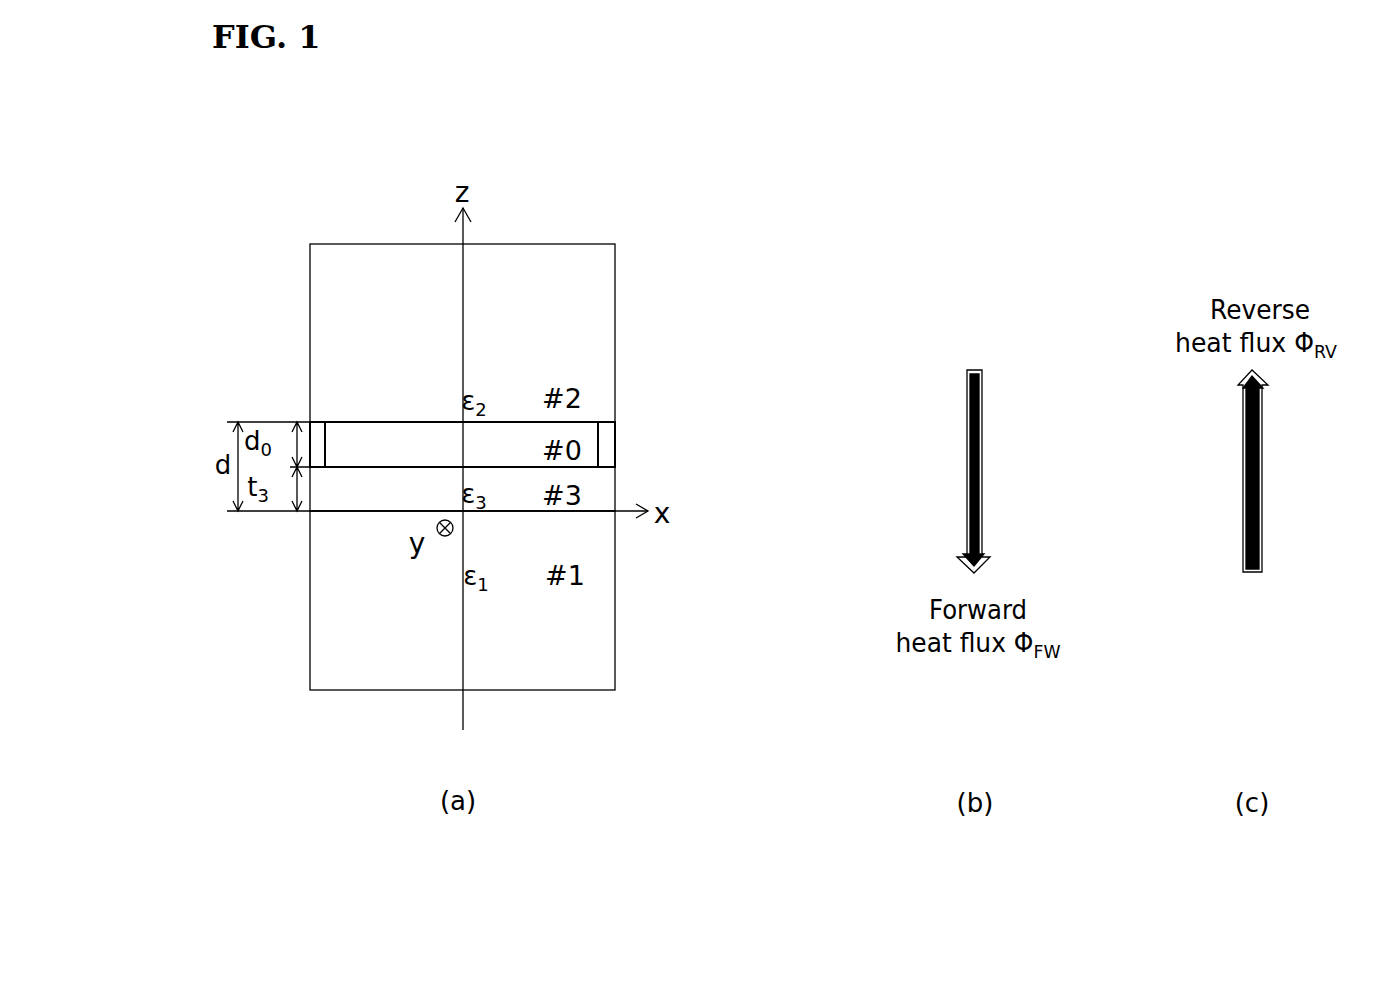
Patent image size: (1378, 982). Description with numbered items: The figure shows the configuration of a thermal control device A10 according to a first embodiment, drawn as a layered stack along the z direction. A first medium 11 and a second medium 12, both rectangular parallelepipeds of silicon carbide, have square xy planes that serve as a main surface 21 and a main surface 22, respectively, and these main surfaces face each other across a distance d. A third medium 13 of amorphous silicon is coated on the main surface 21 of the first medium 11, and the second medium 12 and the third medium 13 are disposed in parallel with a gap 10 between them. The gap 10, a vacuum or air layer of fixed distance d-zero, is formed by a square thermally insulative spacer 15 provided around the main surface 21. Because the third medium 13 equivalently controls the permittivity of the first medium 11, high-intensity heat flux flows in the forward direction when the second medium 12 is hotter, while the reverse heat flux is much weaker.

The thermal control device A10 is at (673, 185).
The gap 10 is at (588, 458).
The first medium 11 is at (602, 580).
The second medium 12 is at (600, 338).
The third medium 13 is at (602, 492).
The thermally insulative spacer 15 is at (607, 437).
The main surface 21 is at (598, 511).
The main surface 22 is at (352, 422).